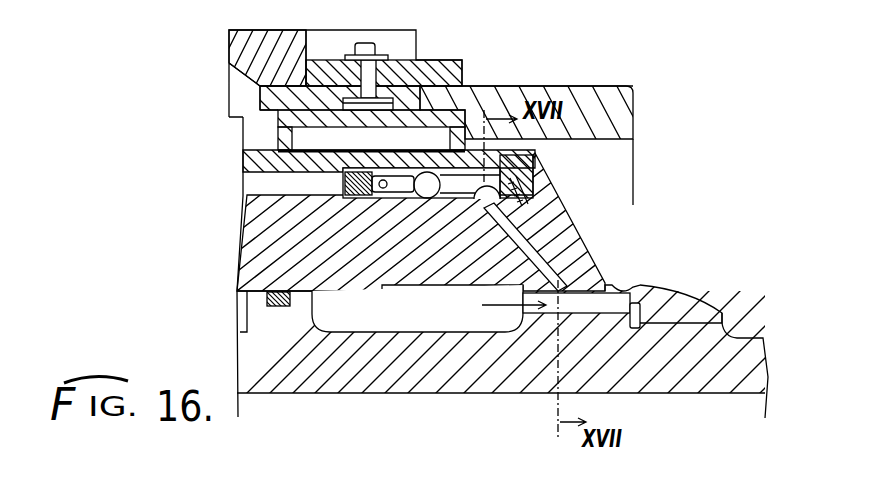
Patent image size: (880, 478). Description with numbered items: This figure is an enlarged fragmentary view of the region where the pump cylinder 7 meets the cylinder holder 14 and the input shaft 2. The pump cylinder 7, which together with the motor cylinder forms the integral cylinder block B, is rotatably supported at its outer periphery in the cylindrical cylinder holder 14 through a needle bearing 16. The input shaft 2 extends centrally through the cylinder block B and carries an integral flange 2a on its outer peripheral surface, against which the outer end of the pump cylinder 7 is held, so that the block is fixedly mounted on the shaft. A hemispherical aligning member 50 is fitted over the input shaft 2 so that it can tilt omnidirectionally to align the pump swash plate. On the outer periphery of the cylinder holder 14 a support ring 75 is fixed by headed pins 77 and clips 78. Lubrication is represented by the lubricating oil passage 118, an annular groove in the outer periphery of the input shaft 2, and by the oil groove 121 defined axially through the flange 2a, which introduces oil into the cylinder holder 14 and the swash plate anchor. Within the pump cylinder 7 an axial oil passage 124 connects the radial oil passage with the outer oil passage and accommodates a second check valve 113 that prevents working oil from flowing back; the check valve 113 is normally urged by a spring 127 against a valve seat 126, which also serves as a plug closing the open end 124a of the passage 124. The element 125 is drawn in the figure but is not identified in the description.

The input shaft 2 is at (755, 347).
The flange 2a is at (624, 290).
The pump cylinder 7 is at (574, 230).
The cylinder holder 14 is at (578, 86).
The needle bearing 16 is at (432, 128).
The hemispherical aligning member 50 is at (688, 294).
The support ring 75 is at (417, 56).
The headed pins 77 is at (370, 45).
The clips 78 is at (352, 50).
The second check valve 113 is at (412, 200).
The lubricating oil passage 118 is at (389, 326).
The oil groove 121 is at (592, 314).
The axial oil passage 124 is at (243, 171).
The open end 124a is at (537, 167).
The passage 125 is at (506, 241).
The valve seat 126 is at (447, 203).
The spring 127 is at (373, 200).
The cylinder block B is at (230, 212).